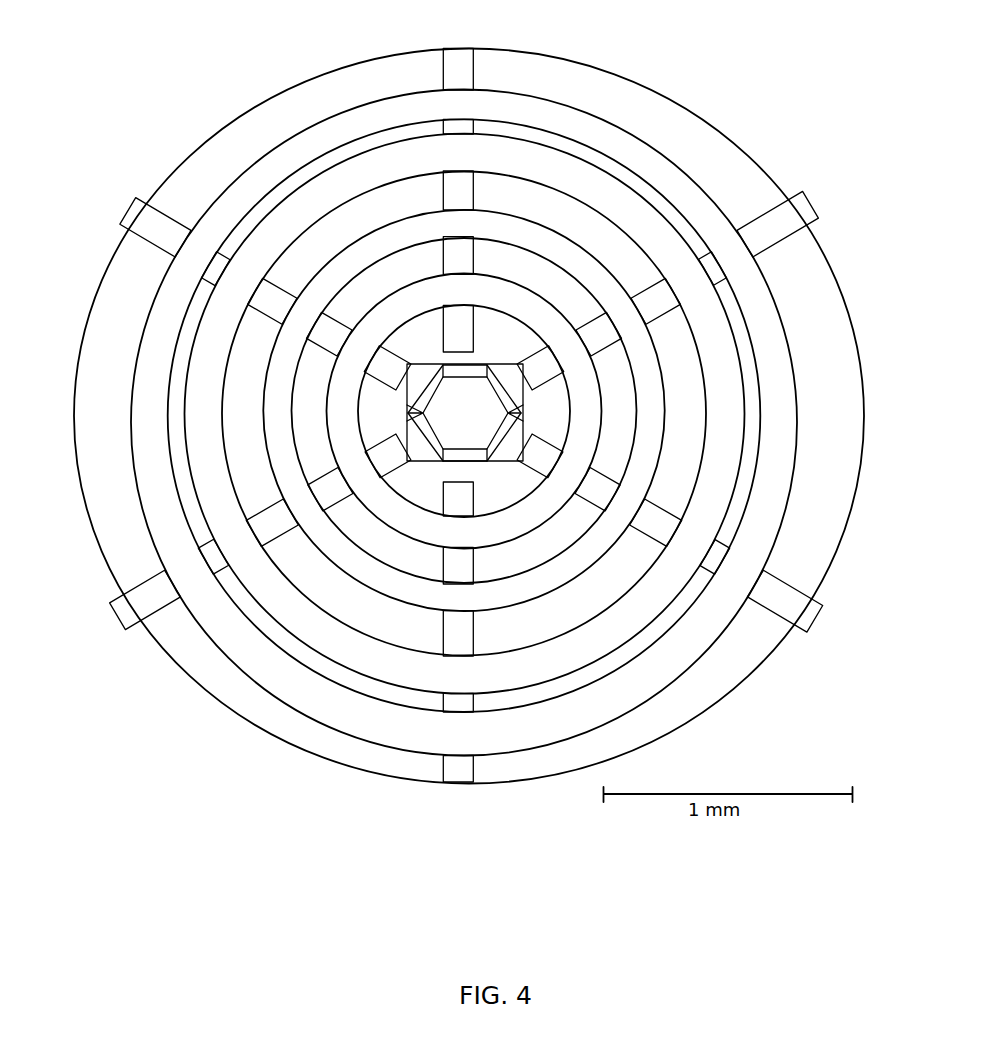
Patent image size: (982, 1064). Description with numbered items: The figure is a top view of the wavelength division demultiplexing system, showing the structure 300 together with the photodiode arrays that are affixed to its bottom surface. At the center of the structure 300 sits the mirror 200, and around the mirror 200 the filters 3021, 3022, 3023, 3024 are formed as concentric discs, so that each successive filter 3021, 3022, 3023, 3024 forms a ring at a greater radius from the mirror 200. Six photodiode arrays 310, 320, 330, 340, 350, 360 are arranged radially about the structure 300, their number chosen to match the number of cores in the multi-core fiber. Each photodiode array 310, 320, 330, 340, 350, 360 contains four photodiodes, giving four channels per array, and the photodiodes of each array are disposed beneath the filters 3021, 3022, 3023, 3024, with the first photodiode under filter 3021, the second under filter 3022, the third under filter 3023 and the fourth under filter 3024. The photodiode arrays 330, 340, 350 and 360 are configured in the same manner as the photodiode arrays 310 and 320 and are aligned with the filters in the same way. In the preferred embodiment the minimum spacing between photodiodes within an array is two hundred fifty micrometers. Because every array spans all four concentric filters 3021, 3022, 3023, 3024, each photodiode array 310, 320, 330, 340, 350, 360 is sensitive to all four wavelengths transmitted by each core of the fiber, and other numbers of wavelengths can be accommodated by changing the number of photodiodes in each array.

The structure 300 is at (684, 105).
The mirror 200 is at (479, 408).
The filter 3021 is at (520, 522).
The filter 3022 is at (570, 563).
The filter 3023 is at (605, 634).
The filter 3024 is at (645, 692).
The photodiode array 310 is at (132, 212).
The photodiode array 320 is at (803, 617).
The photodiode array 330 is at (465, 782).
The photodiode array 340 is at (119, 621).
The photodiode array 350 is at (470, 67).
The photodiode array 360 is at (815, 205).